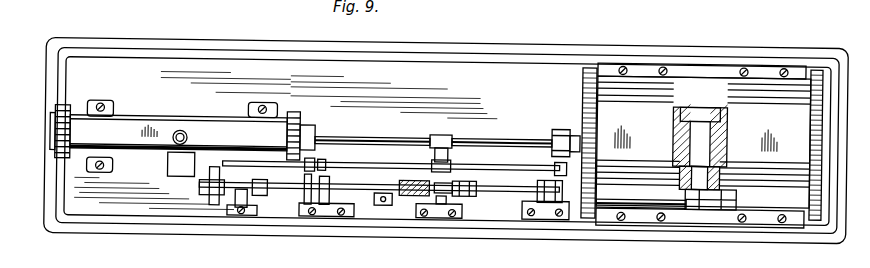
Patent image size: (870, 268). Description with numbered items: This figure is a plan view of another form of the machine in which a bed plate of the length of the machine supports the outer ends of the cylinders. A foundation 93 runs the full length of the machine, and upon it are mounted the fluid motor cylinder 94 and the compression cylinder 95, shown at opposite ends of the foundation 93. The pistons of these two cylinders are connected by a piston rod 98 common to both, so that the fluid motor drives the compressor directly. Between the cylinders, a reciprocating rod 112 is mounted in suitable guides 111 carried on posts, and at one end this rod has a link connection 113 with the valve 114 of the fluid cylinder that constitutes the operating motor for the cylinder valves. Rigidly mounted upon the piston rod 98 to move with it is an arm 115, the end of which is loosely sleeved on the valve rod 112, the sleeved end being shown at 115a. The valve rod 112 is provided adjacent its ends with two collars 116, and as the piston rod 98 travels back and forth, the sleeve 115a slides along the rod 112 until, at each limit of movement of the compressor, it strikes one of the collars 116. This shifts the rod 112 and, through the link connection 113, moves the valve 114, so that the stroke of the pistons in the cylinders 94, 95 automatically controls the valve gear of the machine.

The foundation 93 is at (748, 38).
The fluid motor cylinder 94 is at (137, 161).
The compression cylinder 95 is at (702, 145).
The piston rod 98 is at (373, 130).
The guides 111 is at (318, 161).
The reciprocating rod 112 is at (408, 163).
The link connection 113 is at (258, 195).
The valve 114 is at (240, 202).
The arm 115 is at (457, 143).
The sleeve 115a is at (453, 168).
The collars 116 is at (338, 176).